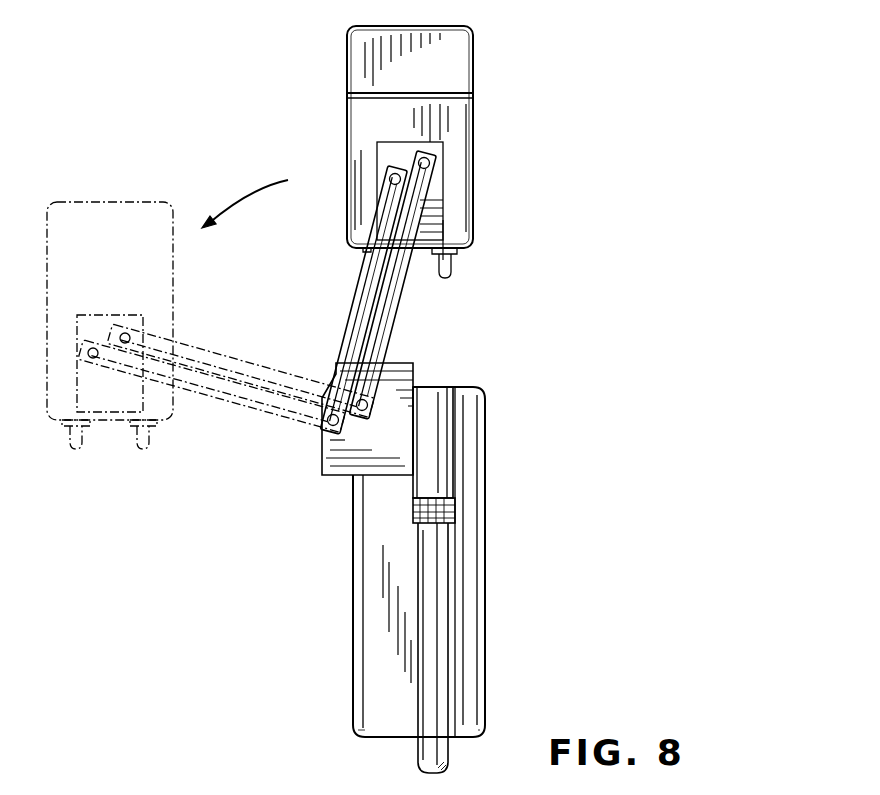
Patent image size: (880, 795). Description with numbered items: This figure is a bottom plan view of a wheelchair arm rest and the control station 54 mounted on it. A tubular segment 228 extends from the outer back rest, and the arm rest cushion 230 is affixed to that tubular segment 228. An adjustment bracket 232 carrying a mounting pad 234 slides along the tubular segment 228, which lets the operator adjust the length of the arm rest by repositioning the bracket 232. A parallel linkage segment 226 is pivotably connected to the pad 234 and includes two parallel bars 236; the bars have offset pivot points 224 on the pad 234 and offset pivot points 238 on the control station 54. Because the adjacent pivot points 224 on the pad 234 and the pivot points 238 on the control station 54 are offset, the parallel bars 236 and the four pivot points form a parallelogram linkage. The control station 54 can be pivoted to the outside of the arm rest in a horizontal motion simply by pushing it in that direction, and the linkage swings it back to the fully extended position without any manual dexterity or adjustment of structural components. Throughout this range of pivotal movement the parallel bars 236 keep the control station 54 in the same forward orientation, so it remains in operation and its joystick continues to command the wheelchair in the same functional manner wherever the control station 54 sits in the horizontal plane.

The control station 54 is at (463, 67).
The pivot points 224 is at (362, 418).
The parallel linkage segment 226 is at (387, 287).
The tubular segment 228 is at (437, 627).
The arm rest cushion 230 is at (375, 603).
The adjustment bracket 232 is at (457, 457).
The mounting pad 234 is at (355, 462).
The parallel bars 236 is at (368, 290).
The pivot points 238 is at (419, 159).